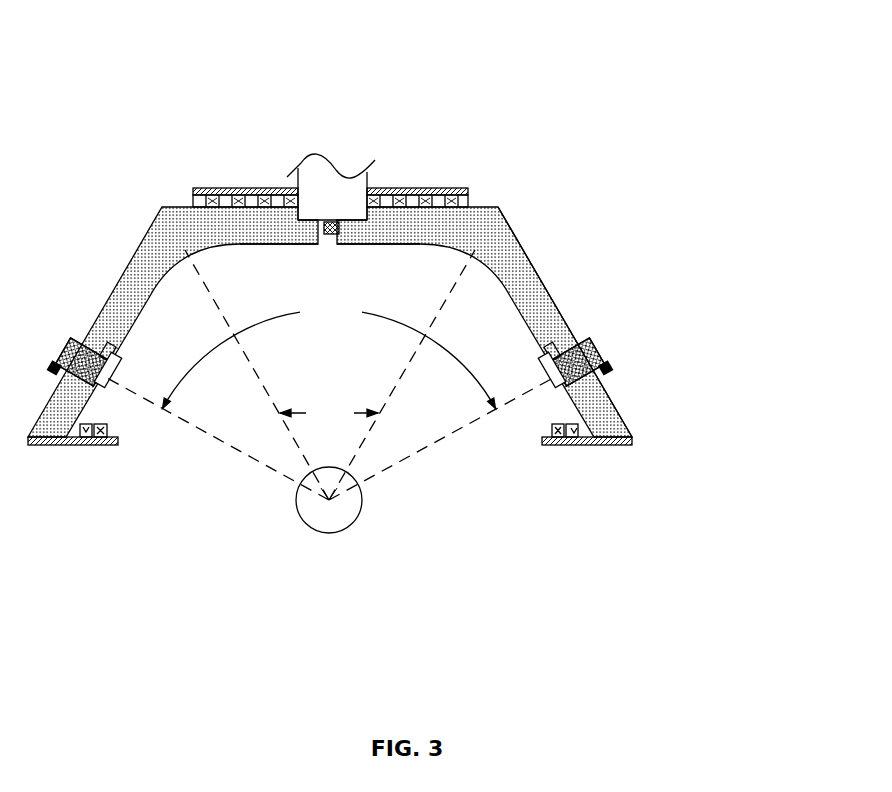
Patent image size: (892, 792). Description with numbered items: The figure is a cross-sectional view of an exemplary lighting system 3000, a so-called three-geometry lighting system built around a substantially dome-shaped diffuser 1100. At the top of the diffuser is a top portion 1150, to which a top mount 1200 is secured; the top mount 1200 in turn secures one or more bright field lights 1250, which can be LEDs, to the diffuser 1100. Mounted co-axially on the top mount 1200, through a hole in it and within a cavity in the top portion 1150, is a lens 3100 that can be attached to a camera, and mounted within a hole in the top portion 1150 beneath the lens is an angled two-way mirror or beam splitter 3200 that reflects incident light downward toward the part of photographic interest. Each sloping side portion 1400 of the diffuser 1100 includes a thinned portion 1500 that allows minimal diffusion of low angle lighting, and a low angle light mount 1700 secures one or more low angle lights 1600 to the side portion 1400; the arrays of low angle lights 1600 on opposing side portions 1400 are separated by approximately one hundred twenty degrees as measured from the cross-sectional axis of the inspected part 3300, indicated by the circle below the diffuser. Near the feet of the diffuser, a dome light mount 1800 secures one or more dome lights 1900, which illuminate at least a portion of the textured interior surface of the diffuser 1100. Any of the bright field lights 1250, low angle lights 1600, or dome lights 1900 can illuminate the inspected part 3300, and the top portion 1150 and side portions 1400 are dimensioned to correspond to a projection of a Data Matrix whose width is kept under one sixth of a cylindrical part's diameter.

The system 3000 is at (46, 87).
The diffuser 1100 is at (530, 250).
The top portion 1150 is at (448, 228).
The side portion 1400 is at (540, 300).
The top mount 1200 is at (410, 183).
The bright field lights 1250 is at (190, 200).
The lens 3100 is at (338, 155).
The beam splitter 3200 is at (332, 227).
The inspected part 3300 is at (333, 533).
The low angle lights 1600 is at (103, 355).
The low angle light mount 1700 is at (590, 344).
The thinned portion 1500 is at (555, 377).
The dome light mount 1800 is at (588, 445).
The dome lights 1900 is at (110, 425).